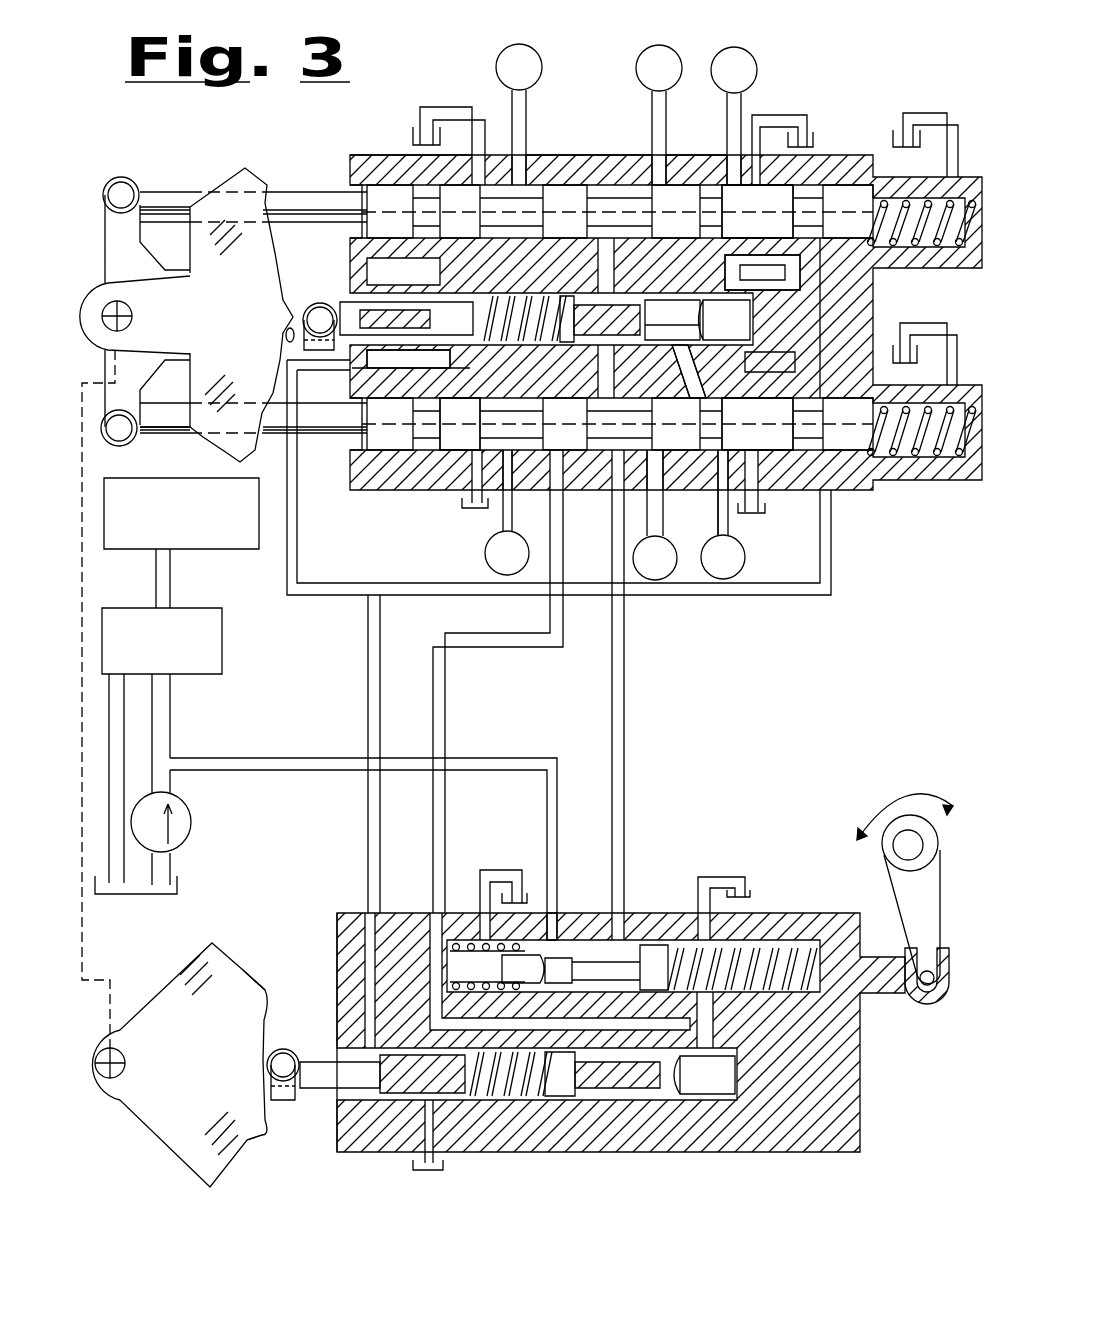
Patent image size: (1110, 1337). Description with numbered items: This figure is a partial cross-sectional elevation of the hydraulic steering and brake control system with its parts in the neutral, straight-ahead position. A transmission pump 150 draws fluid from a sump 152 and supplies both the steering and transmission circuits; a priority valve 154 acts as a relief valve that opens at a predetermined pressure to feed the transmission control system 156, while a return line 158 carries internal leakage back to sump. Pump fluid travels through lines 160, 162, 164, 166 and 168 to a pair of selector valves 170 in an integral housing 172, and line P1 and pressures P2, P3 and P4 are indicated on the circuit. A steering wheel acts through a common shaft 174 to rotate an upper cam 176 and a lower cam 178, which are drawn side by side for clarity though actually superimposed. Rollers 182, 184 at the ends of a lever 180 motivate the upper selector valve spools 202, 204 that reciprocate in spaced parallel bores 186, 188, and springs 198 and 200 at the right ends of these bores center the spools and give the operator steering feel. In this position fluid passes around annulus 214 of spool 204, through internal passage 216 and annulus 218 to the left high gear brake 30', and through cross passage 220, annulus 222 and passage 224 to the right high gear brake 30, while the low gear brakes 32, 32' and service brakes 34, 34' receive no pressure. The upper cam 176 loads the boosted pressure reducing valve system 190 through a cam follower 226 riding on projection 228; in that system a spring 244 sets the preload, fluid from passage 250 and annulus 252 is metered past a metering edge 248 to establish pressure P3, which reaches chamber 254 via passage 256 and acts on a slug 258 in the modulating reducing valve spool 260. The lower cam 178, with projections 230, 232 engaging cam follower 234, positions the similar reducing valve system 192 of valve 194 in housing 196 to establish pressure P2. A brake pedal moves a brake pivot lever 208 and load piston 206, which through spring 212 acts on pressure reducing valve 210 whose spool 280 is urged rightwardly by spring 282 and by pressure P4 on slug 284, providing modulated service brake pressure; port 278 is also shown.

The right high gear brake 30 is at (717, 116).
The left high gear brake 30' is at (743, 514).
The right low gear brake 32 is at (534, 107).
The left low gear brake 32' is at (481, 512).
The right service brake 34 is at (634, 115).
The left service brake 34' is at (667, 515).
The transmission pump 150 is at (192, 830).
The sump 152 is at (178, 888).
The priority valve 154 is at (200, 610).
The transmission control system 156 is at (205, 549).
The return line 158 is at (113, 895).
The line 160 is at (170, 784).
The line 162 is at (212, 758).
The line 164 is at (381, 627).
The line 166 is at (830, 570).
The line 168 is at (297, 574).
The selector valves 170 is at (822, 98).
The housing 172 is at (378, 160).
The common shaft 174 is at (124, 322).
The upper cam 176 is at (232, 308).
The lower cam 178 is at (217, 1061).
The lever 180 is at (134, 258).
The roller 182 is at (118, 180).
The roller 184 is at (120, 449).
The bore 186 is at (352, 205).
The bore 188 is at (386, 452).
The boosted pressure reducing valve system 190 is at (528, 356).
The boosted pressure reducing valve system 192 is at (502, 1114).
The valve 194 is at (690, 860).
The housing 196 is at (346, 912).
The spring 198 is at (922, 196).
The spring 200 is at (888, 470).
The upper selector valve spool 202 is at (340, 222).
The upper selector valve spool 204 is at (344, 430).
The load piston 206 is at (883, 998).
The brake pivot lever 208 is at (892, 890).
The pressure reducing valve 210 is at (557, 913).
The spring 212 is at (762, 950).
The annulus 214 is at (796, 432).
The internal passage 216 is at (756, 352).
The annulus 218 is at (722, 490).
The cross passage 220 is at (816, 328).
The annulus 222 is at (794, 218).
The passage 224 is at (746, 268).
The cam follower 226 is at (328, 303).
The projection 228 is at (286, 332).
The projection 230 is at (270, 993).
The projection 232 is at (270, 1148).
The cam follower 234 is at (280, 1050).
The spring 244 is at (526, 296).
The metering edge 248 is at (622, 368).
The passage 250 is at (450, 370).
The annulus 252 is at (586, 296).
The chamber 254 is at (672, 328).
The passage 256 is at (672, 320).
The slug 258 is at (725, 320).
The modulating reducing valve spool 260 is at (682, 295).
The port 278 is at (622, 183).
The reducing valve spool 280 is at (704, 920).
The spring 282 is at (470, 945).
The slug 284 is at (520, 988).
The pressure line P1 is at (381, 696).
The pressure P2 is at (445, 711).
The pressure P3 is at (700, 183).
The pressure P4 is at (625, 694).